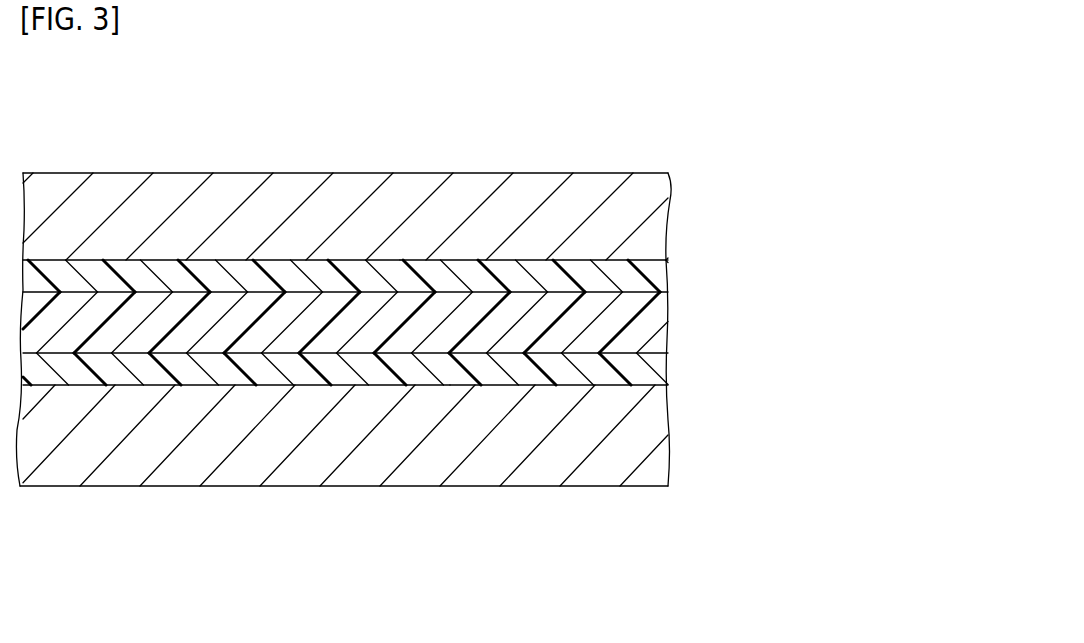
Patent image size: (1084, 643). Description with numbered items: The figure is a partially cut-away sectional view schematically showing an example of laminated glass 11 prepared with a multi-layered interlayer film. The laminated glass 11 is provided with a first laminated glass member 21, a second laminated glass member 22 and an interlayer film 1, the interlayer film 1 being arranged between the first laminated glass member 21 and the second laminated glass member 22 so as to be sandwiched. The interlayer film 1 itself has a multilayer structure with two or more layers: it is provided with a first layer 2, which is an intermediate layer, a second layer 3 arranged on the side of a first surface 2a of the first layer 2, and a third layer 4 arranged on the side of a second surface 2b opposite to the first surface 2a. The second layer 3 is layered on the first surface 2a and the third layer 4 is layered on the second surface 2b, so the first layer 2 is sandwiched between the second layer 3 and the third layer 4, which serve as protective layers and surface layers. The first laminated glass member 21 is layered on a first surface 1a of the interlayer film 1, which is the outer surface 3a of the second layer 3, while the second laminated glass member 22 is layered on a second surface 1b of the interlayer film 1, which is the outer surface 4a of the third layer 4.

The laminated glass 11 is at (160, 130).
The interlayer film 1 is at (388, 328).
The first surface 1a is at (357, 260).
The second surface 1b is at (350, 385).
The first layer 2 is at (671, 325).
The first surface 2a is at (463, 292).
The second surface 2b is at (453, 353).
The second layer 3 is at (671, 277).
The surface 3a is at (583, 260).
The third layer 4 is at (669, 370).
The surface 4a is at (578, 385).
The first laminated glass member 21 is at (668, 212).
The second laminated glass member 22 is at (668, 450).